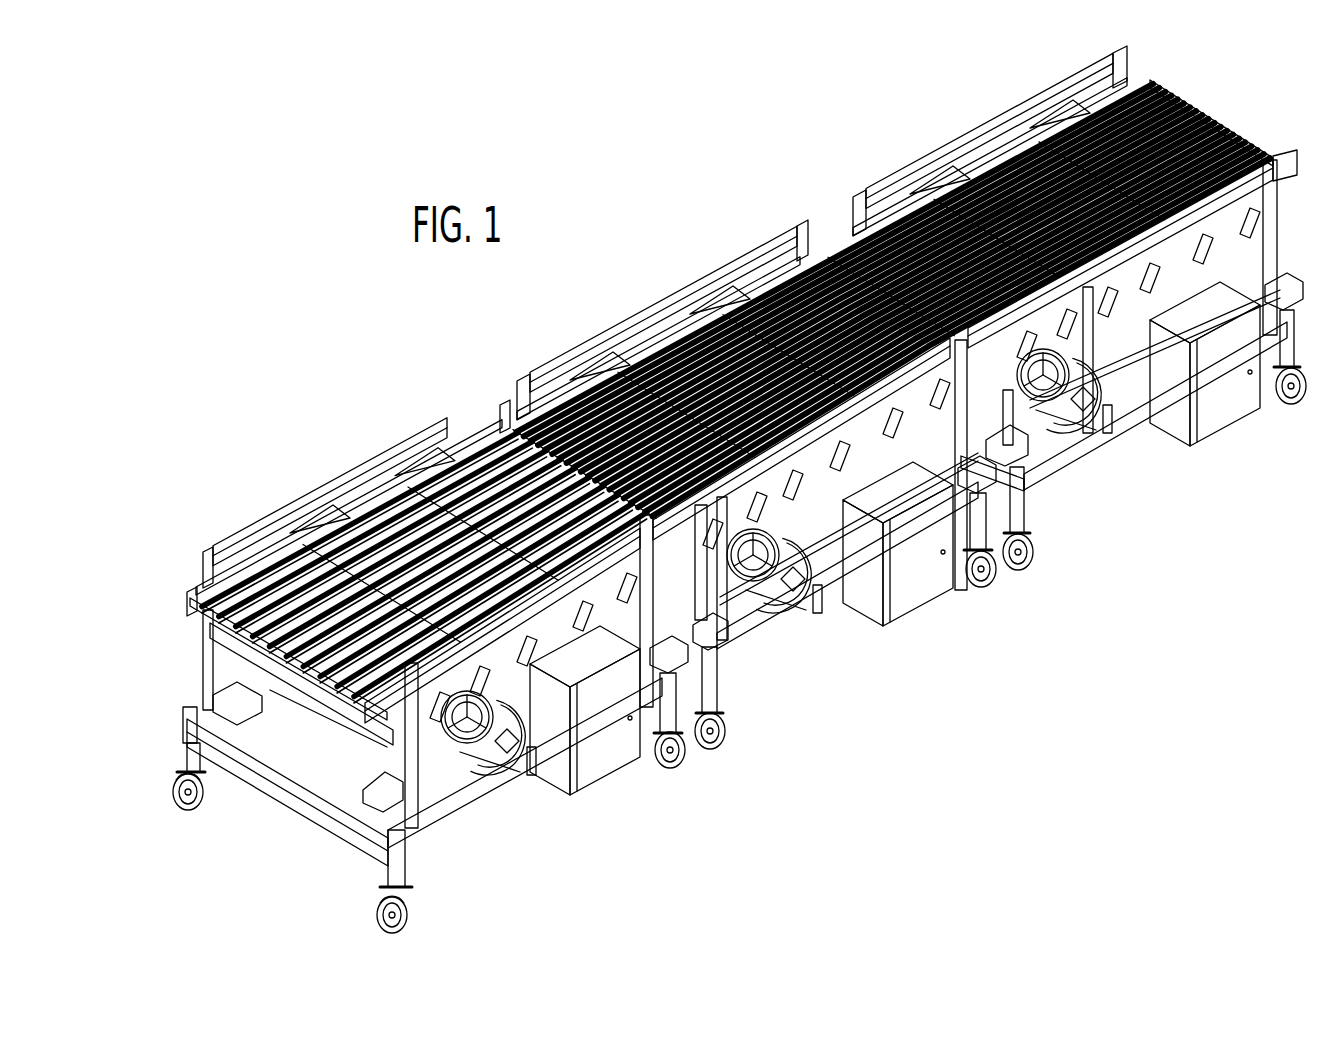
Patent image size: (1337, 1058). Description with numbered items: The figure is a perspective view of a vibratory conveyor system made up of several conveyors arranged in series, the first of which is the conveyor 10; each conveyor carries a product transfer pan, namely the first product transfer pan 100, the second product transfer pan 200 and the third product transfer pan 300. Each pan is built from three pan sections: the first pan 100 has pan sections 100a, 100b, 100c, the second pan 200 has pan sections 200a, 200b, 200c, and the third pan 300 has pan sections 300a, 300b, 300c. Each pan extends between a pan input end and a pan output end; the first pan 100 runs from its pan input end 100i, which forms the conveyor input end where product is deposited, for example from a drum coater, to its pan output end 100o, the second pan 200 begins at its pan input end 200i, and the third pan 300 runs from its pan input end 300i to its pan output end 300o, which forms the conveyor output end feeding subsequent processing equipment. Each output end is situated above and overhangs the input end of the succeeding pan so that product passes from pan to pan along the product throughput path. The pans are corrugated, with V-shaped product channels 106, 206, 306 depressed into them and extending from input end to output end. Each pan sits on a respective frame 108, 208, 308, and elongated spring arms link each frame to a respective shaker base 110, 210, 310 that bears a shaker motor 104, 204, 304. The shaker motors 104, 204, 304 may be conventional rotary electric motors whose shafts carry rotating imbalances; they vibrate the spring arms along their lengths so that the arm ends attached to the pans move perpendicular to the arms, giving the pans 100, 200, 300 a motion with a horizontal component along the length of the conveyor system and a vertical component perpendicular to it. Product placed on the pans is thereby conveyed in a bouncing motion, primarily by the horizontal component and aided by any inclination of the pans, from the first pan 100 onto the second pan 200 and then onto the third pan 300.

The conveyor 10 is at (648, 178).
The product transfer pan 100 is at (350, 470).
The pan section 100a is at (263, 567).
The pan section 100b is at (367, 500).
The pan section 100c is at (405, 435).
The pan input end 100i is at (187, 598).
The pan output end 100o is at (497, 405).
The shaker motor 104 is at (478, 700).
The product channels 106 is at (578, 642).
The frame 108 is at (540, 700).
The shaker base 110 is at (434, 757).
The product transfer pan 200 is at (657, 345).
The pan section 200a is at (560, 362).
The pan section 200b is at (680, 320).
The pan section 200c is at (763, 247).
The pan input end 200i is at (513, 406).
The shaker motor 204 is at (768, 620).
The product channels 206 is at (885, 482).
The frame 208 is at (815, 533).
The shaker base 210 is at (818, 565).
The product transfer pan 300 is at (937, 137).
The pan section 300a is at (878, 212).
The pan section 300b is at (987, 148).
The pan section 300c is at (1058, 85).
The pan input end 300i is at (808, 250).
The pan output end 300o is at (1146, 80).
The shaker motor 304 is at (1055, 430).
The product channels 306 is at (1212, 320).
The frame 308 is at (1105, 315).
The shaker base 310 is at (1140, 353).